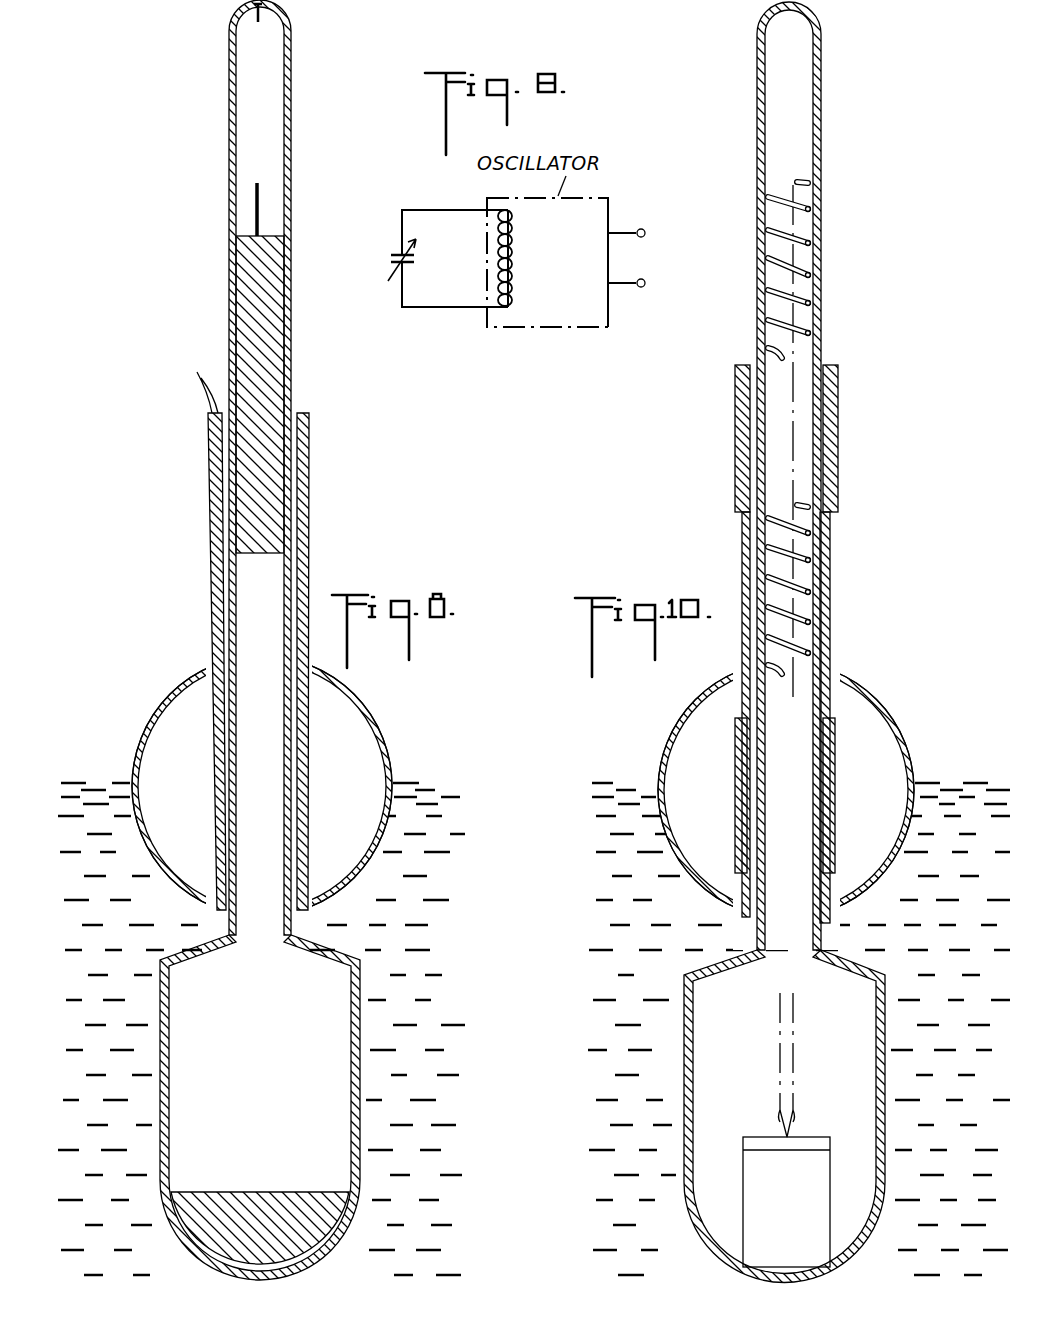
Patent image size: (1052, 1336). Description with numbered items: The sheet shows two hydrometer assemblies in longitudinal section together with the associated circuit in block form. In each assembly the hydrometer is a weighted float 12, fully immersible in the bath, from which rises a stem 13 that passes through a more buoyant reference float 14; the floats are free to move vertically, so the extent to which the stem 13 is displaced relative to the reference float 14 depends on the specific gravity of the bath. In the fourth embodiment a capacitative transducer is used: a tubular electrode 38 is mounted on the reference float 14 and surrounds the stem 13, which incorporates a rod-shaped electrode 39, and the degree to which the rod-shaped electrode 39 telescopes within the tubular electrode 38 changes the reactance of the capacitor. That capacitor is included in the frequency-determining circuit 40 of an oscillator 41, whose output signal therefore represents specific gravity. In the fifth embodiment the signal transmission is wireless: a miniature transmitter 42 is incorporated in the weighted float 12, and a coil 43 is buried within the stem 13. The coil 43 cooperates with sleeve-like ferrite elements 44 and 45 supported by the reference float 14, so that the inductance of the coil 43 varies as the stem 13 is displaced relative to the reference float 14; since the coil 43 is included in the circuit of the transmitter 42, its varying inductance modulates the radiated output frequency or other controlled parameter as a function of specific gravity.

In FIG. 8, the weighted float 12 is at (340, 997).
In FIG. 10, the weighted float 12 is at (686, 1062).
In FIG. 8, the stem 13 is at (292, 353).
In FIG. 10, the stem 13 is at (821, 240).
In FIG. 8, the reference float 14 is at (163, 696).
In FIG. 10, the reference float 14 is at (686, 722).
In FIG. 8, the tubular electrode 38 is at (268, 487).
In FIG. 9, the tubular electrode 38 is at (412, 258).
In FIG. 8, the rod-shaped electrode 39 is at (308, 548).
In FIG. 9, the rod-shaped electrode 39 is at (410, 263).
In FIG. 9, the frequency-determining circuit 40 is at (512, 289).
In FIG. 9, the oscillator 41 is at (588, 223).
In FIG. 10, the miniature transmitter 42 is at (818, 1172).
In FIG. 10, the coil 43 is at (812, 560).
In FIG. 10, the sleeve-like ferrite element 44 is at (838, 436).
In FIG. 10, the sleeve-like ferrite element 45 is at (836, 797).